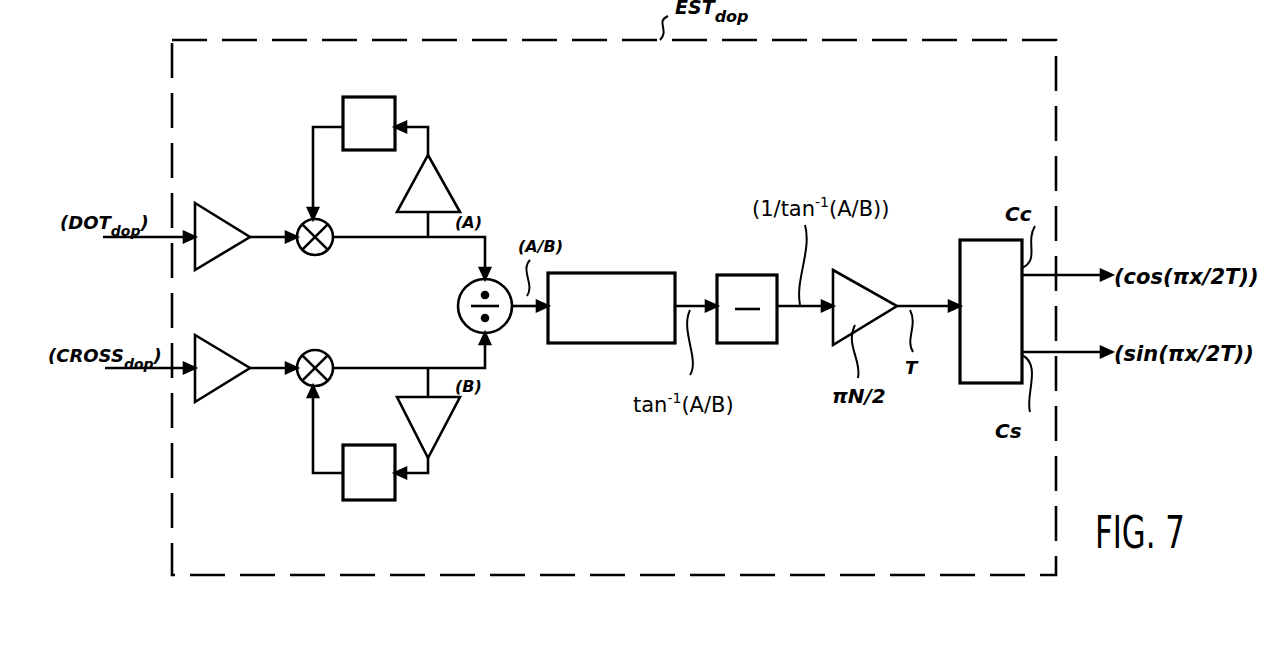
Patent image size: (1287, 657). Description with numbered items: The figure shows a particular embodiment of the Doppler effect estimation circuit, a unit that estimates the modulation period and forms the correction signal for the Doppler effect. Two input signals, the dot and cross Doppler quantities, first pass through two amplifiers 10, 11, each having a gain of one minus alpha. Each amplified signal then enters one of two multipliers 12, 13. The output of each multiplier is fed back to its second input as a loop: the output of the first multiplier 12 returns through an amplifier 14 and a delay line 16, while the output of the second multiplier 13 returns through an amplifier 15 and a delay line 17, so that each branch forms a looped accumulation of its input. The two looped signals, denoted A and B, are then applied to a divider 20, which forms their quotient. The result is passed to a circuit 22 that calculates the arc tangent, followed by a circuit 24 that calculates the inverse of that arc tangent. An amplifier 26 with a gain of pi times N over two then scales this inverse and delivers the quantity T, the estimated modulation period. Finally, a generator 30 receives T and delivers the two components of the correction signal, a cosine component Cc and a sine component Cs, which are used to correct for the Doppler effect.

The amplifier 10 is at (230, 257).
The amplifier 11 is at (222, 384).
The multiplier 12 is at (334, 243).
The multiplier 13 is at (330, 354).
The amplifier 14 is at (440, 195).
The amplifier 15 is at (440, 440).
The delay line 16 is at (395, 106).
The delay line 17 is at (345, 496).
The divider 20 is at (505, 325).
The circuit for calculating the arc tangent 22 is at (620, 273).
The circuit which calculates the inverse of the arc tangent 24 is at (738, 275).
The amplifier 26 is at (865, 275).
The generator 30 is at (1005, 331).